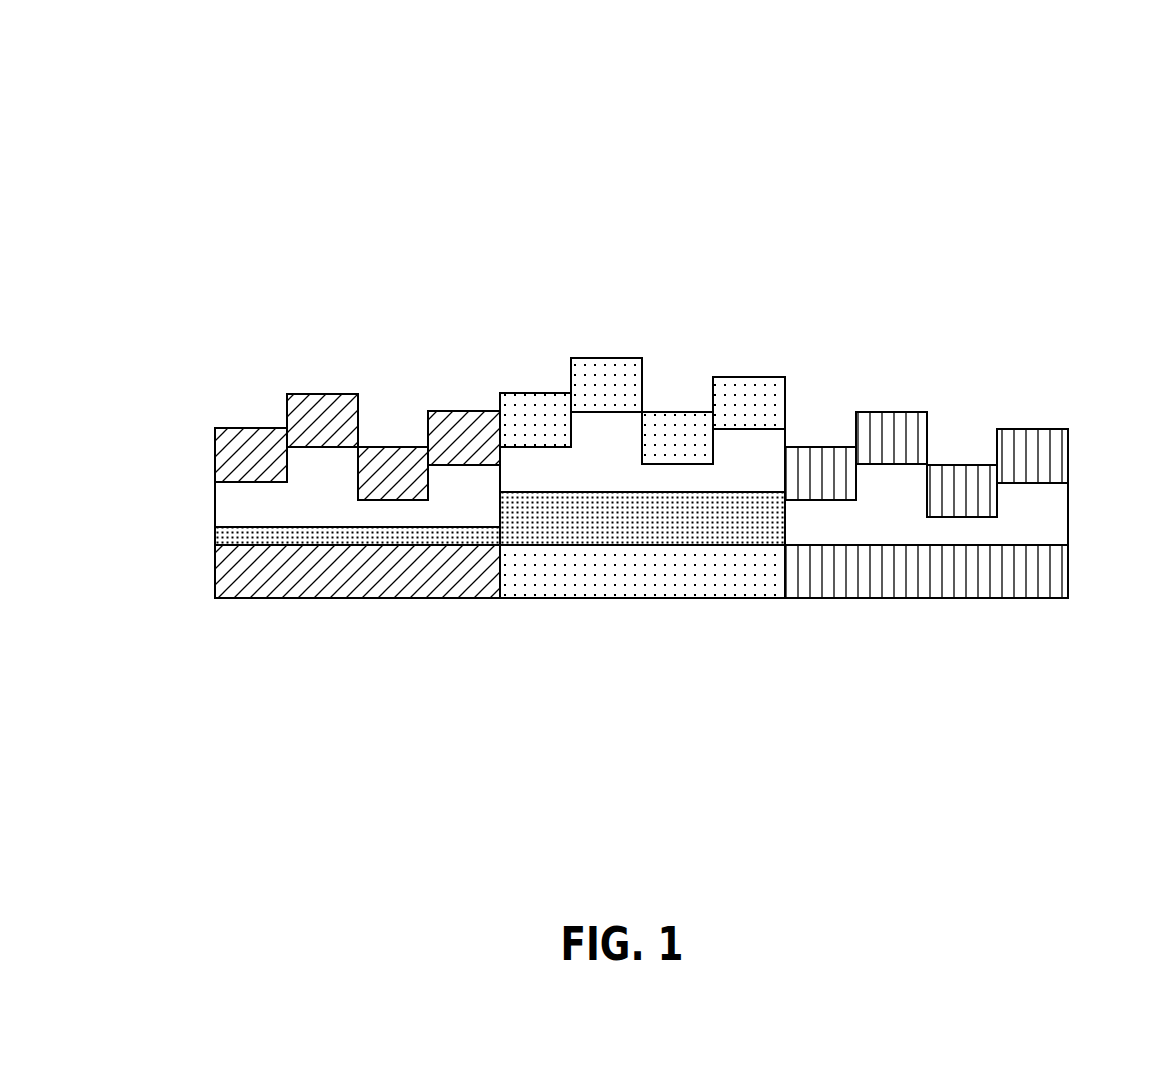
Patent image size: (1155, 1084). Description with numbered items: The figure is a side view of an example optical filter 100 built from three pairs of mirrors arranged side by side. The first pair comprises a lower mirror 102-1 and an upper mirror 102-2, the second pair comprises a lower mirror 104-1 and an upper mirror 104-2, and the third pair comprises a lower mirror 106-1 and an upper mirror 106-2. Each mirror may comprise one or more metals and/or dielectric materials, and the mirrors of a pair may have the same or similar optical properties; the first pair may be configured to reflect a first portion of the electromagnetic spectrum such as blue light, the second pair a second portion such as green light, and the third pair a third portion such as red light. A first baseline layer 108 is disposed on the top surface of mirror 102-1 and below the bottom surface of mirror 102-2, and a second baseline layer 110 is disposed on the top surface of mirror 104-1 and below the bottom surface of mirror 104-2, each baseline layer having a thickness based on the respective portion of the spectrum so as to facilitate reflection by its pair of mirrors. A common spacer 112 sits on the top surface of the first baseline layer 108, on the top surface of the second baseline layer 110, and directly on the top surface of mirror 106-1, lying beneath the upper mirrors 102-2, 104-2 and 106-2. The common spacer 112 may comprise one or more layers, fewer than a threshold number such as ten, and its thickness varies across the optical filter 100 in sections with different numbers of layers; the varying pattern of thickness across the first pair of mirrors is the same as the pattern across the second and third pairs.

The optical filter 100 is at (100, 63).
The mirror 102-1 is at (338, 598).
The mirror 102-2 is at (215, 377).
The mirror 104-1 is at (622, 598).
The mirror 104-2 is at (500, 340).
The mirror 106-1 is at (922, 598).
The mirror 106-2 is at (787, 398).
The first baseline layer 108 is at (215, 533).
The second baseline layer 110 is at (614, 528).
The common spacer 112 is at (301, 508).